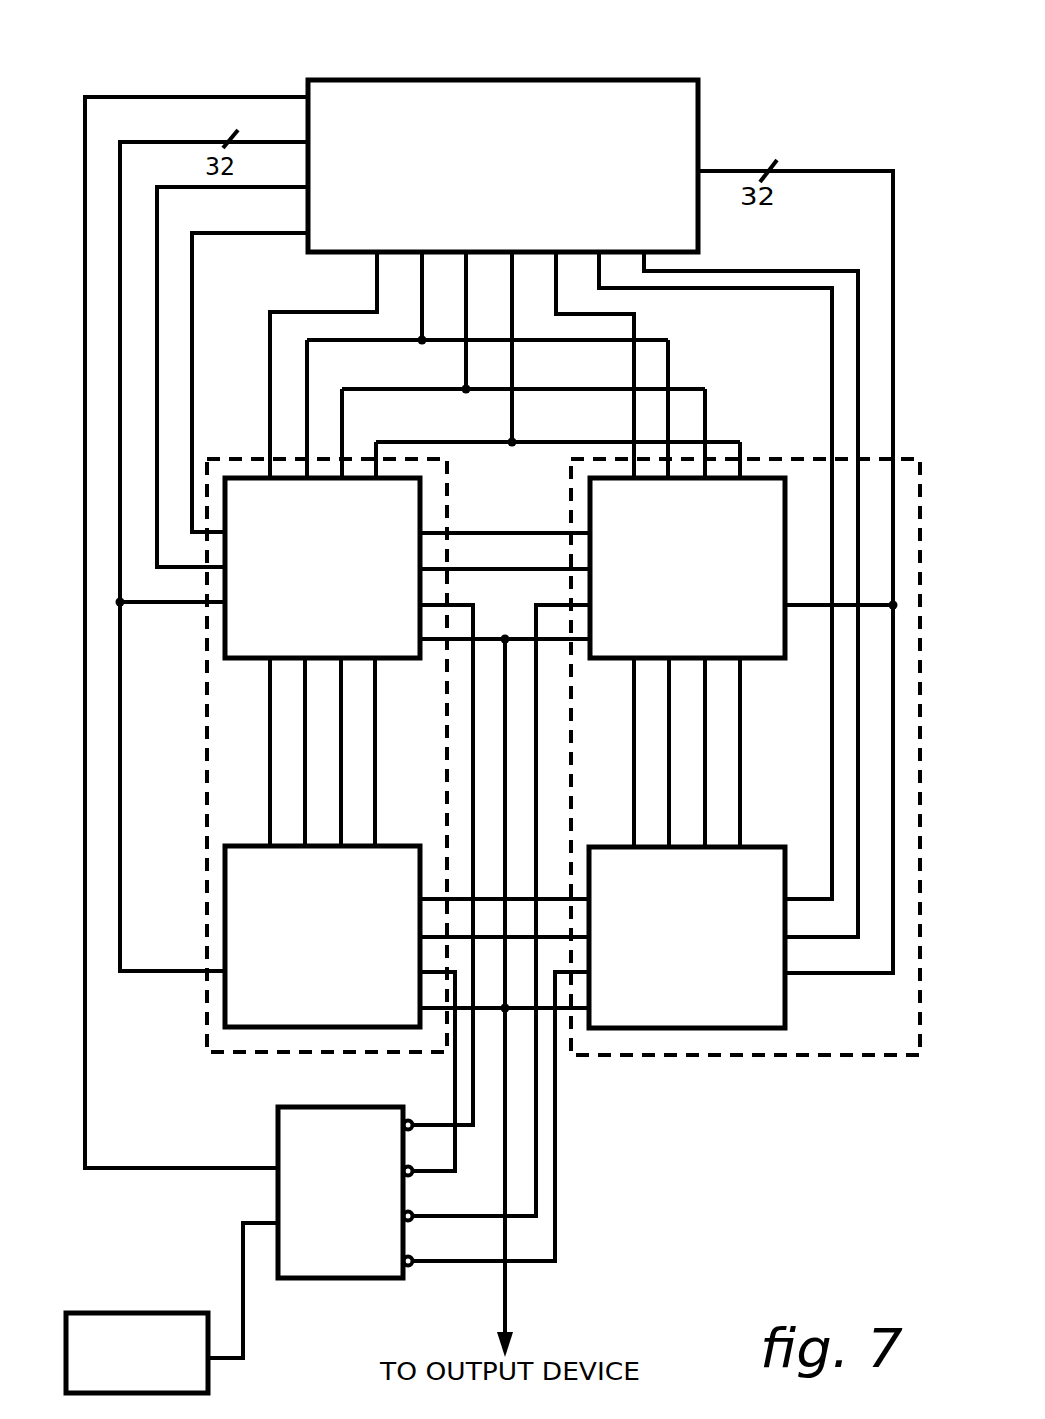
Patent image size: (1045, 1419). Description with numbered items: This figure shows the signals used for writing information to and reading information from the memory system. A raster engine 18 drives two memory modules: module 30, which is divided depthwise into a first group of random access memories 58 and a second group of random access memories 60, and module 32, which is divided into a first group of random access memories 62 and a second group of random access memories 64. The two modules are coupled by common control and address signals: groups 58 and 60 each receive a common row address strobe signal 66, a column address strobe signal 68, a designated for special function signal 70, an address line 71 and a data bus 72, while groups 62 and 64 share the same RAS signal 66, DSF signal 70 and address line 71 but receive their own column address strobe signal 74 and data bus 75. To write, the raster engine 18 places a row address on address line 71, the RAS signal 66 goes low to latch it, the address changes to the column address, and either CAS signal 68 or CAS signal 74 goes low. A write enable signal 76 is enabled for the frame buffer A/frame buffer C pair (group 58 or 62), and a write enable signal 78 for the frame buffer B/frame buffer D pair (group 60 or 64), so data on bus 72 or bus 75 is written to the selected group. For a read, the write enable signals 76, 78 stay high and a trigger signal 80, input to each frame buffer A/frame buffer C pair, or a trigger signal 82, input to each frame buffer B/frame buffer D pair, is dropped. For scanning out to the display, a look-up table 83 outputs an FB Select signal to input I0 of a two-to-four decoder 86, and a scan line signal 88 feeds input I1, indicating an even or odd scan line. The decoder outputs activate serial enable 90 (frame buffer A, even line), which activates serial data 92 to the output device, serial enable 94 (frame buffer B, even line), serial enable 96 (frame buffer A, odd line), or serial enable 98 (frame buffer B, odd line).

The raster engine 18 is at (660, 79).
The module 30 is at (207, 718).
The module 32 is at (783, 1058).
The first group of random access memories 58 is at (322, 568).
The second group of random access memories 60 is at (322, 936).
The first group of random access memories 62 is at (687, 568).
The second group of random access memories 64 is at (687, 937).
The row address strobe signal 66 is at (512, 412).
The column address strobe signal 68 is at (377, 294).
The designated for special function signal 70 is at (419, 312).
The address line 71 is at (465, 318).
The data bus 72 is at (116, 214).
The column address strobe signal 74 is at (637, 322).
The data bus 75 is at (868, 171).
The write enable signal 76 is at (149, 272).
The write enable signal 78 is at (817, 271).
The trigger signal 80 is at (192, 262).
The trigger signal 82 is at (832, 337).
The look-up table 83 is at (132, 1311).
The two-to-four decoder 86 is at (277, 1142).
The scan line signal 88 is at (87, 97).
The serial enable 90 is at (465, 600).
The serial data 92 is at (485, 637).
The serial enable 94 is at (453, 1133).
The serial enable 96 is at (537, 743).
The serial enable 98 is at (553, 1082).